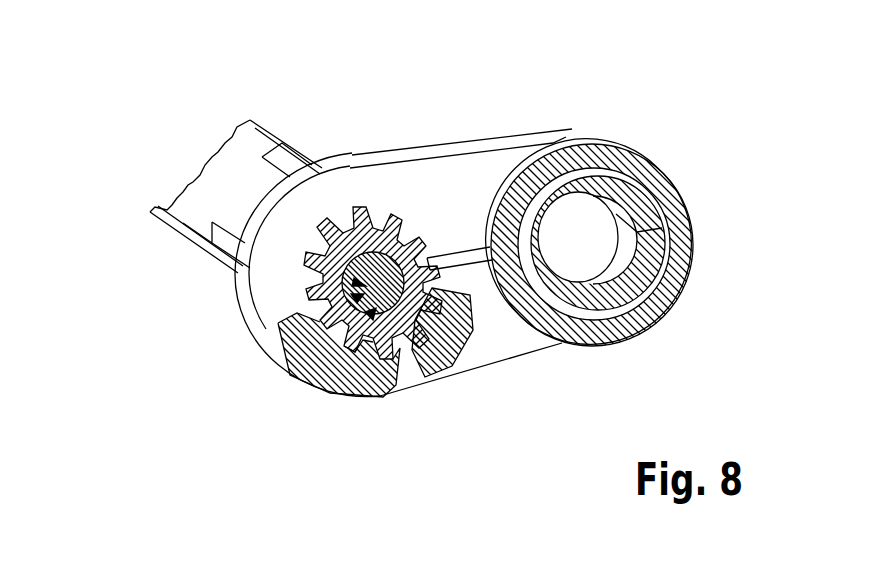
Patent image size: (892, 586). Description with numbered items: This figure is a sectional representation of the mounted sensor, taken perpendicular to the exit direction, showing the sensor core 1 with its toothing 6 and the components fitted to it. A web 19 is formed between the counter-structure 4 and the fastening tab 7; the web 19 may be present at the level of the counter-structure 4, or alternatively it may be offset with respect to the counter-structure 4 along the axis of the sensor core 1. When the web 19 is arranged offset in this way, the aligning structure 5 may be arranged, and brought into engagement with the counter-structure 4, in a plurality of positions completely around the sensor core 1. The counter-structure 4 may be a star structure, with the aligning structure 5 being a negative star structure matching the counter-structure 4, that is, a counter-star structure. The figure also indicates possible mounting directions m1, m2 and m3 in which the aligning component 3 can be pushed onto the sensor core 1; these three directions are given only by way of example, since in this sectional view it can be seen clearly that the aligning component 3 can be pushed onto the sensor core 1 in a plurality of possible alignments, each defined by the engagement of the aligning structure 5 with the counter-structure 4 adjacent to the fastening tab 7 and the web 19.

The sensor core 1 is at (396, 117).
The aligning component 3 is at (407, 391).
The counter-structure 4 is at (457, 364).
The aligning structure 5 is at (363, 358).
The toothing 6 is at (395, 233).
The fastening tab 7 is at (600, 135).
The web 19 is at (458, 265).
The mounting direction m1 is at (370, 316).
The mounting direction m2 is at (353, 299).
The mounting direction m3 is at (352, 281).